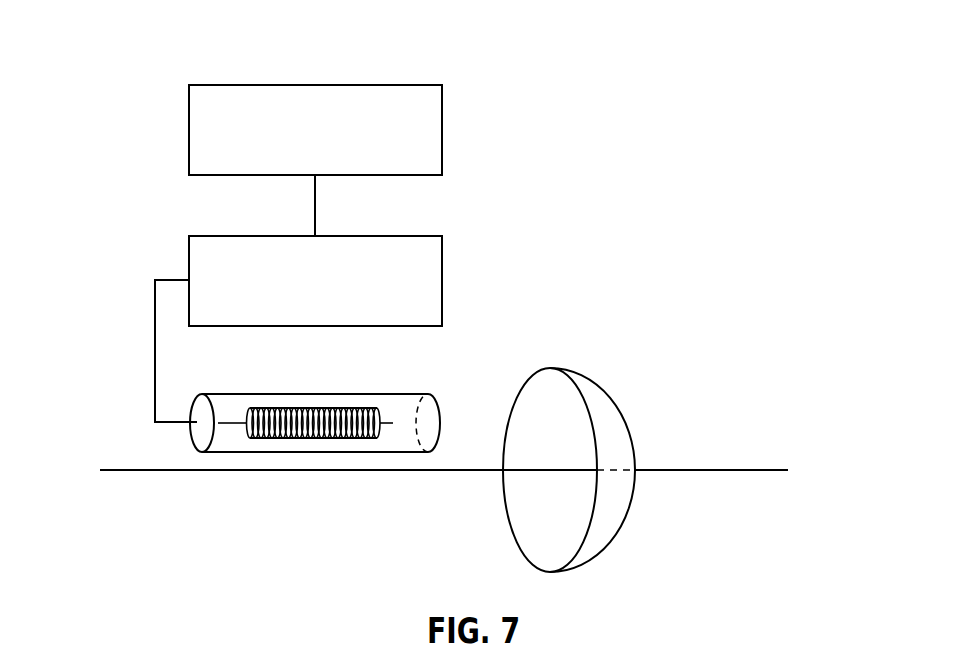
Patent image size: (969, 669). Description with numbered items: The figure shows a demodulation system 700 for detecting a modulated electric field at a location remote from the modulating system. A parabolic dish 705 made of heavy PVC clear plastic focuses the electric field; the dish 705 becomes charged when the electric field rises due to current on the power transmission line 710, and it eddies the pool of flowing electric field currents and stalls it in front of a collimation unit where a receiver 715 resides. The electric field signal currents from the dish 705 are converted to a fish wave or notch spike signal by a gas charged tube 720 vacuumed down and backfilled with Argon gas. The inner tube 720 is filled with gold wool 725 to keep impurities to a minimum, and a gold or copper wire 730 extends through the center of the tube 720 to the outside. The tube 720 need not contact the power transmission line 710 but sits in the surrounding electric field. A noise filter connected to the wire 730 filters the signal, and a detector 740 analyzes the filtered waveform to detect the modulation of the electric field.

The demodulation system 700 is at (138, 57).
The parabolic dish 705 is at (563, 368).
The power transmission line 710 is at (683, 470).
The receiver 715 is at (150, 253).
The gas charged tube 720 is at (313, 452).
The gold wool 725 is at (340, 410).
The wire 730 is at (155, 362).
The detector 740 is at (268, 84).